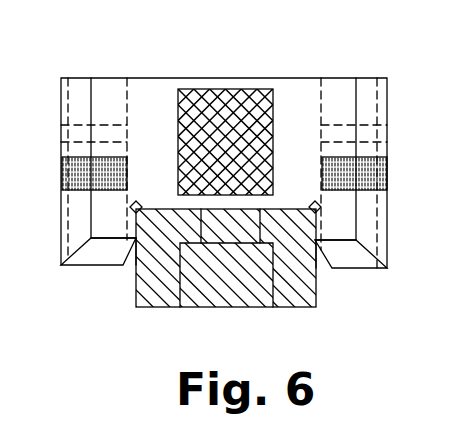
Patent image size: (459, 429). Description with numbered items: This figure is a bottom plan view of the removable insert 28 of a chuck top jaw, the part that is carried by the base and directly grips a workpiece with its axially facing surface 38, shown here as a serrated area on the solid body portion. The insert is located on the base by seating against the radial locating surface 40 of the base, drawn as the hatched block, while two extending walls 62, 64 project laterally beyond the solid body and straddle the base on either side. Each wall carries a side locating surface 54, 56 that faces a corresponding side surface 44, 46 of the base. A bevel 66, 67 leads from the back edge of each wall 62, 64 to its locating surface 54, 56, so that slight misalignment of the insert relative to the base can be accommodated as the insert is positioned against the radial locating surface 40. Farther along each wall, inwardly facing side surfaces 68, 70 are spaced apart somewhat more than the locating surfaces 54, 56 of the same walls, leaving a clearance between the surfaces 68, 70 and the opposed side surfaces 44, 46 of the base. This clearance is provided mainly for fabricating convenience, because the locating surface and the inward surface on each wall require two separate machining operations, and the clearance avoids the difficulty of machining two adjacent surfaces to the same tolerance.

The insert 28 is at (392, 97).
The axially facing surface 38 is at (248, 92).
The radial locating surface 40 is at (293, 305).
The side surface 44 is at (137, 238).
The side surface 46 is at (372, 242).
The side surface 54 is at (139, 210).
The side surface 56 is at (308, 210).
The extending wall 62 is at (77, 237).
The extending wall 64 is at (347, 222).
The bevel 66 is at (134, 252).
The bevel 67 is at (324, 250).
The inwardly facing side surface 68 is at (130, 97).
The inwardly facing side surface 70 is at (322, 100).